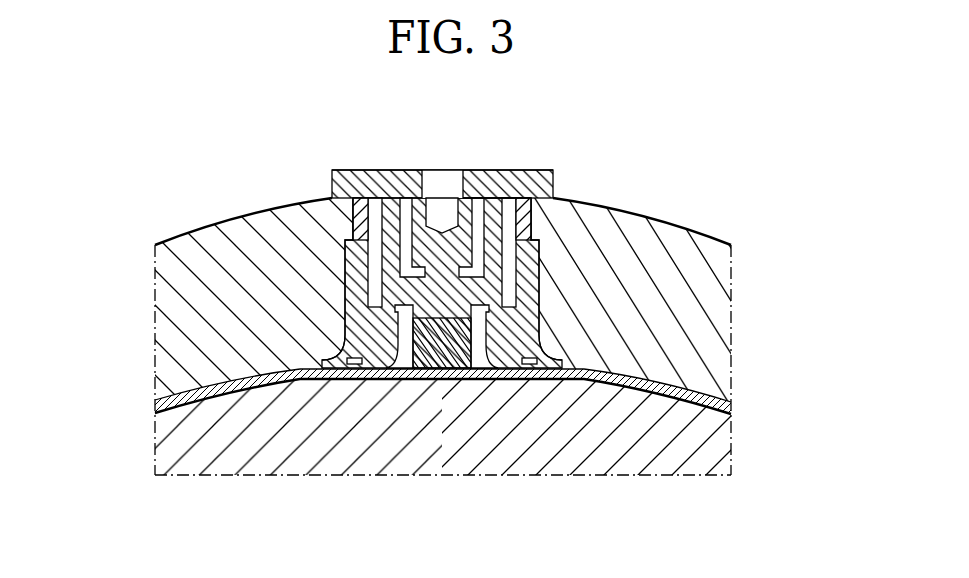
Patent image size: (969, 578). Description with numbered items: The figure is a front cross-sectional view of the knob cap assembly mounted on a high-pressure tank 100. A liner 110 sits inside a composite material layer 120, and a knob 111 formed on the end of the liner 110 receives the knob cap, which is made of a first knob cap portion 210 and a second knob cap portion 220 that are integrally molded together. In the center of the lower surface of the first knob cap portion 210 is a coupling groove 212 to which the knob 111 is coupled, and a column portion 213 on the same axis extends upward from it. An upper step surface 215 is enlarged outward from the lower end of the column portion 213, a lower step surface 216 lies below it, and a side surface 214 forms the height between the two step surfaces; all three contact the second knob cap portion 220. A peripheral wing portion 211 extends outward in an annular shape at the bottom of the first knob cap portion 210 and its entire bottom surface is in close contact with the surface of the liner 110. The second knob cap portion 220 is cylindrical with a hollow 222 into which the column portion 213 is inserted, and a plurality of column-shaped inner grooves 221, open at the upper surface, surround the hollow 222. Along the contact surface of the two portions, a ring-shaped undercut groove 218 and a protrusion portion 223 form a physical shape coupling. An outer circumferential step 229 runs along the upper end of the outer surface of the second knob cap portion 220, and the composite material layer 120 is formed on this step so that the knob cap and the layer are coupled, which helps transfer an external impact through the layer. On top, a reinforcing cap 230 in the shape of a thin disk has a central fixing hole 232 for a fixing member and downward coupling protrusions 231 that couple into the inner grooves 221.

The high-pressure tank 100 is at (275, 455).
The liner 110 is at (228, 396).
The knob 111 is at (441, 380).
The composite material layer 120 is at (200, 270).
The first knob cap portion 210 is at (509, 366).
The peripheral wing portion 211 is at (338, 352).
The coupling groove 212 is at (388, 352).
The column portion 213 is at (453, 250).
The side surface 214 is at (344, 338).
The upper step surface 215 is at (347, 272).
The lower step surface 216 is at (545, 352).
The undercut groove 218 is at (482, 310).
The second knob cap portion 220 is at (547, 262).
The inner groove 221 is at (514, 262).
The hollow 222 is at (542, 287).
The protrusion portion 223 is at (352, 246).
The outer circumferential step 229 is at (424, 268).
The reinforcing cap 230 is at (366, 171).
The coupling protrusion 231 is at (506, 197).
The fixing hole 232 is at (441, 194).